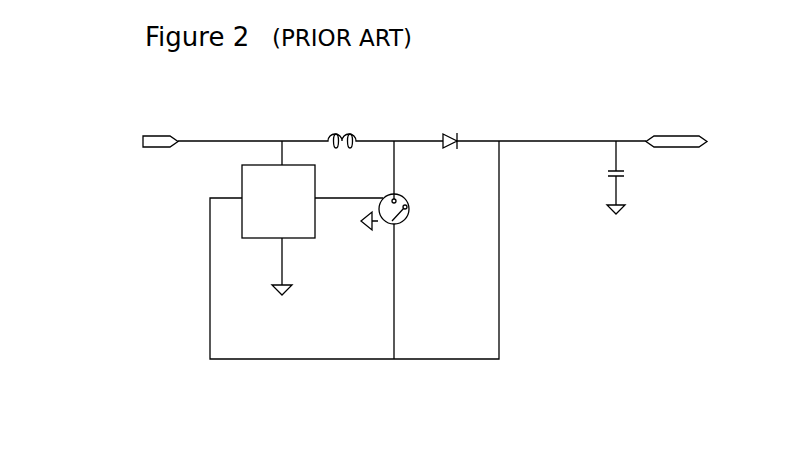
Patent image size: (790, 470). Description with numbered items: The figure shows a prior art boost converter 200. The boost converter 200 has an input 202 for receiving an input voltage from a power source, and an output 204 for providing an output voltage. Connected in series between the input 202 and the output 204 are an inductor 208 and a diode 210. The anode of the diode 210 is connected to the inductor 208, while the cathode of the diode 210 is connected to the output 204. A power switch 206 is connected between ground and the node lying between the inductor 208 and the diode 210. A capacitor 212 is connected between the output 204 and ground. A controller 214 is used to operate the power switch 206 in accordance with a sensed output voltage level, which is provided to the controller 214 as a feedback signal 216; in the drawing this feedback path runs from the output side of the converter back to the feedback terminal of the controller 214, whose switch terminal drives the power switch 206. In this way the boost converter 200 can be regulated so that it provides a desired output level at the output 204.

The boost converter 200 is at (549, 80).
The input 202 is at (146, 138).
The output 204 is at (667, 138).
The power switch 206 is at (389, 223).
The inductor 208 is at (351, 134).
The diode 210 is at (458, 141).
The capacitor 212 is at (621, 174).
The controller 214 is at (242, 223).
The feedback signal 216 is at (460, 360).